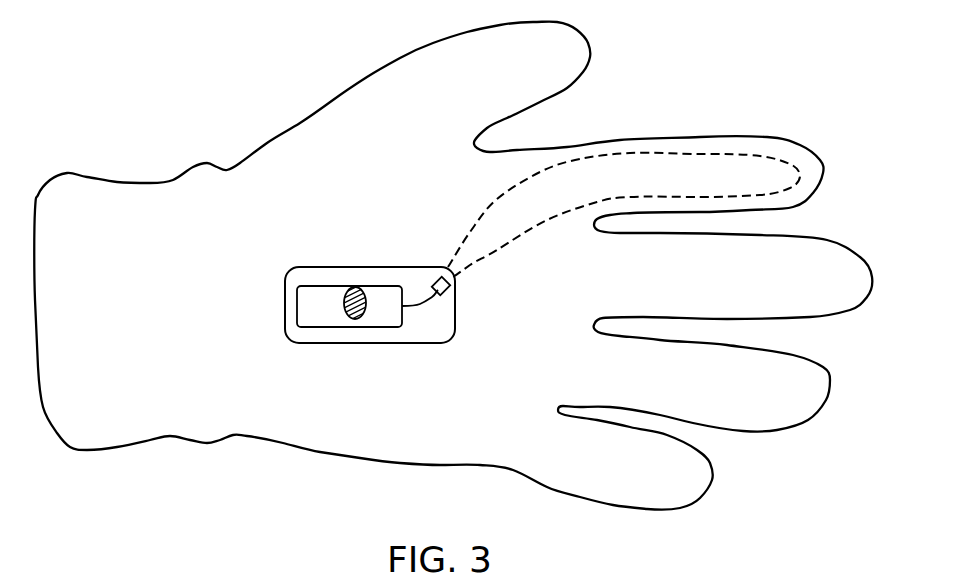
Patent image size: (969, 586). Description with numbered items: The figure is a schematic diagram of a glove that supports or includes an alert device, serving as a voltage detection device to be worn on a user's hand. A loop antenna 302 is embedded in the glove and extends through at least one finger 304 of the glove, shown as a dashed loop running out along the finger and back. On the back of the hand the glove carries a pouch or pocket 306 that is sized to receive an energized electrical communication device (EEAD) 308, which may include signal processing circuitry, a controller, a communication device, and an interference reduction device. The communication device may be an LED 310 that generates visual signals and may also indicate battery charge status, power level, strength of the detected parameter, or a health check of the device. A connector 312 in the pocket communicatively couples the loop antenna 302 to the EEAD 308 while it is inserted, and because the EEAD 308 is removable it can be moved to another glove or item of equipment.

The loop antenna 302 is at (670, 155).
The finger 304 is at (822, 158).
The pouch or pocket 306 is at (368, 267).
The energized electrical communication device (EEAD) 308 is at (312, 307).
The LED 310 is at (360, 318).
The connector 312 is at (438, 297).